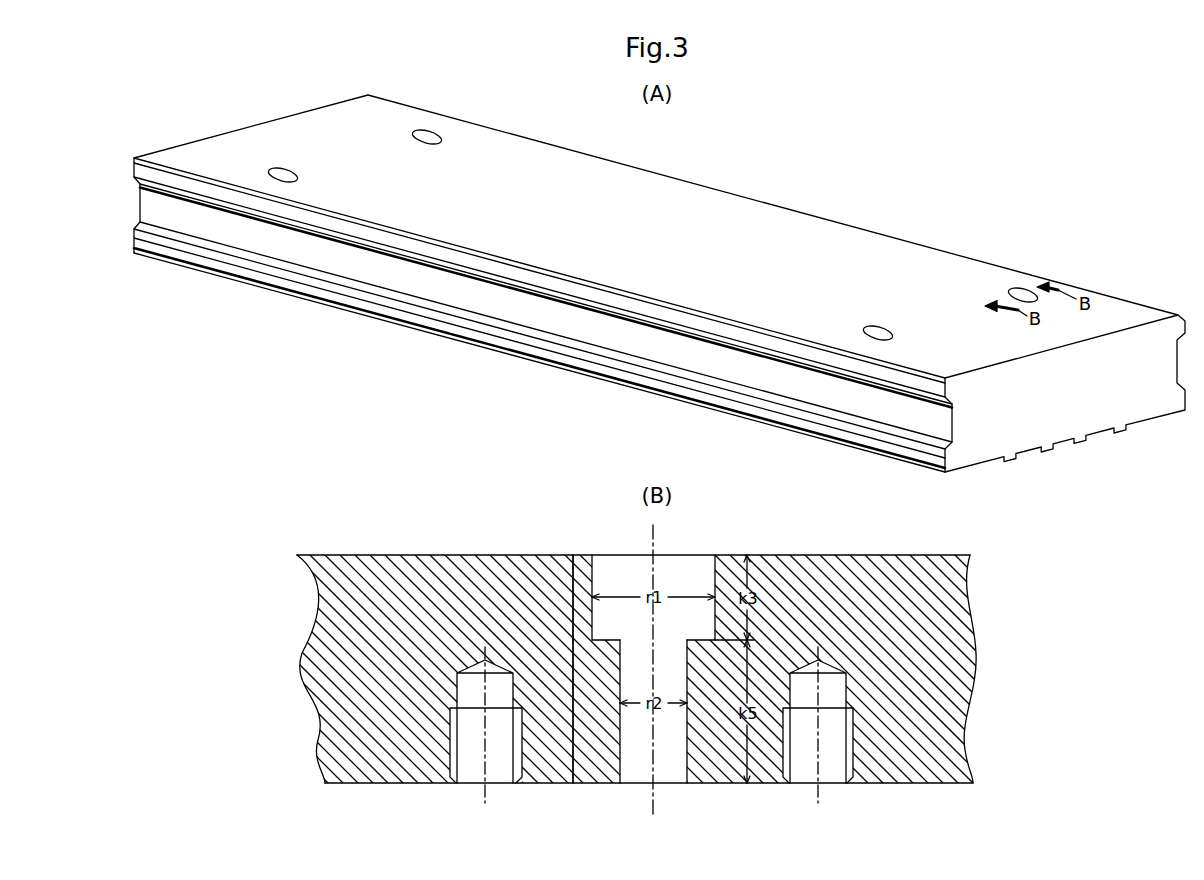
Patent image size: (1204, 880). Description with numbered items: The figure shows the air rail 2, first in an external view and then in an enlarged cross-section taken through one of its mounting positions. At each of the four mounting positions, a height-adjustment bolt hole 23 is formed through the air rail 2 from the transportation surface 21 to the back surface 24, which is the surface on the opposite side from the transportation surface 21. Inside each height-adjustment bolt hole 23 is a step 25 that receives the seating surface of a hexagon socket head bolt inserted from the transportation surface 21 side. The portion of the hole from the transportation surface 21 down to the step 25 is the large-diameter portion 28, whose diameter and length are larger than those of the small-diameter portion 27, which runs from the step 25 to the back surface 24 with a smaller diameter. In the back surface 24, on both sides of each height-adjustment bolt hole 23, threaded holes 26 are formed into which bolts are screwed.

The air rail 2 is at (946, 223).
The transportation surface 21 is at (802, 223).
The height-adjustment bolt hole 23 is at (289, 172).
The back surface 24 is at (792, 432).
The step 25 is at (605, 640).
The threaded hole 26 is at (480, 787).
The small-diameter portion 27 is at (573, 714).
The large-diameter portion 28 is at (573, 600).